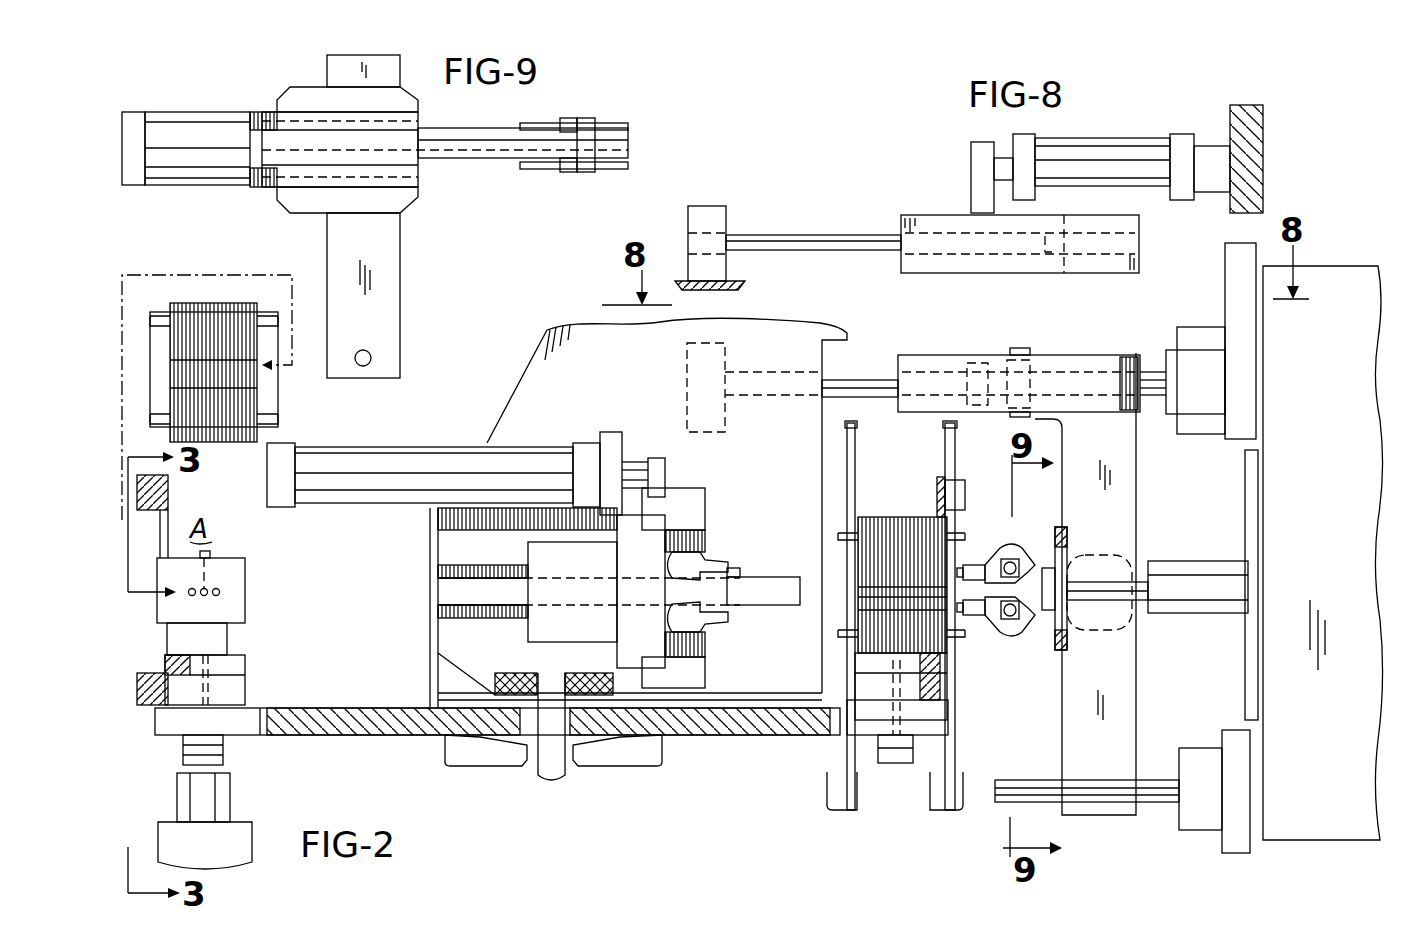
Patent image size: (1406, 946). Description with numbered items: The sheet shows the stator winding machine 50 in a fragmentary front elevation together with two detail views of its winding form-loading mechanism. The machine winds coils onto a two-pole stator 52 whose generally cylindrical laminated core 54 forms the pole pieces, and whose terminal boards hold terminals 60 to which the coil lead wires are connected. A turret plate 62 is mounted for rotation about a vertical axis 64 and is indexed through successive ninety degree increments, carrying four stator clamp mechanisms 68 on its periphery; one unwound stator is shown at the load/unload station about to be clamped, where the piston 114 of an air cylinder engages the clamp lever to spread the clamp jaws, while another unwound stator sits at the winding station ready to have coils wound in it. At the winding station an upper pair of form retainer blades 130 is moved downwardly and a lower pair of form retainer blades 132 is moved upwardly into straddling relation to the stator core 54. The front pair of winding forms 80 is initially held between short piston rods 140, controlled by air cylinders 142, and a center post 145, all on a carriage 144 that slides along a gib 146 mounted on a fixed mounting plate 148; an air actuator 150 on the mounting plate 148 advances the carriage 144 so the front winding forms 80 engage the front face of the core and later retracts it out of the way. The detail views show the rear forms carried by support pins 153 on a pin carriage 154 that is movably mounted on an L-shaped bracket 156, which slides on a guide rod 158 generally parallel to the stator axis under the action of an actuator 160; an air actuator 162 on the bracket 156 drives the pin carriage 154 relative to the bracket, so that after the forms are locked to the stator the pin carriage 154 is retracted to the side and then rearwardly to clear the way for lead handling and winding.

In FIG. 2, the stator winding machine 50 is at (778, 785).
In FIG. 2, the stator 52 is at (272, 385).
In FIG. 2, the laminated core 54 is at (183, 372).
In FIG. 2, the terminals 60 is at (165, 312).
In FIG. 2, the turret plate 62 is at (387, 735).
In FIG. 2, the vertical axis 64 is at (540, 770).
In FIG. 2, the stator clamp mechanisms 68 is at (258, 655).
In FIG. 2, the front winding forms 80 is at (700, 563).
In FIG. 2, the piston 114 is at (230, 797).
In FIG. 2, the upper form retainer blades 130 is at (947, 435).
In FIG. 2, the lower form retainer blades 132 is at (847, 748).
In FIG. 2, the short piston rods 140 is at (693, 538).
In FIG. 2, the air cylinders 142 is at (687, 492).
In FIG. 2, the carriage 144 is at (530, 562).
In FIG. 2, the center post 145 is at (730, 565).
In FIG. 2, the gib 146 is at (445, 588).
In FIG. 2, the mounting plate 148 is at (540, 372).
In FIG. 2, the air actuator 150 is at (437, 460).
In FIG. 9, the support pins 153 is at (613, 122).
In FIG. 9, the pin carriage 154 is at (482, 150).
In FIG. 9, the L-shaped bracket 156 is at (393, 247).
In FIG. 8, the L-shaped bracket 156 is at (1021, 266).
In FIG. 2, the L-shaped bracket 156 is at (1130, 492).
In FIG. 8, the guide rod 158 is at (820, 236).
In FIG. 8, the actuator 160 is at (1113, 140).
In FIG. 9, the air actuator 162 is at (203, 167).